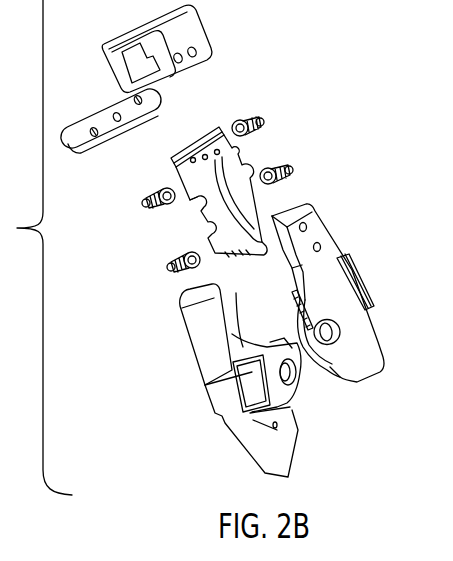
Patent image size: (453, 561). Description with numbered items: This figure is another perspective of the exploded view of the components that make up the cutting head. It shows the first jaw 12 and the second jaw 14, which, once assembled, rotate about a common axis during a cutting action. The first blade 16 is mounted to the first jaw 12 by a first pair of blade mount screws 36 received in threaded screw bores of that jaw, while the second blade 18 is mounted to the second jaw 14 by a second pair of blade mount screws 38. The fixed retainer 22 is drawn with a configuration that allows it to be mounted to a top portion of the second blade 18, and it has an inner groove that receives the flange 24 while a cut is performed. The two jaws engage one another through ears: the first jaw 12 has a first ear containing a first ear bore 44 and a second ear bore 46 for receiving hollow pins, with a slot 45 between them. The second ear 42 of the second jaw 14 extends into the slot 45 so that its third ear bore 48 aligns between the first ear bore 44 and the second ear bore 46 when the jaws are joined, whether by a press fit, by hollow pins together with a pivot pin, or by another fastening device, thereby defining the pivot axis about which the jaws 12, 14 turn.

The first jaw 12 is at (333, 248).
The second jaw 14 is at (197, 353).
The first blade 16 is at (213, 127).
The second blade 18 is at (173, 173).
The fixed retainer 22 is at (191, 28).
The flange 24 is at (101, 107).
The first pair of blade mount screws 36 is at (290, 172).
The second pair of blade mount screws 38 is at (165, 263).
The second ear 42 is at (240, 312).
The first ear bore 44 is at (338, 333).
The slot 45 is at (288, 315).
The second ear bore 46 is at (287, 337).
The third ear bore 48 is at (305, 382).